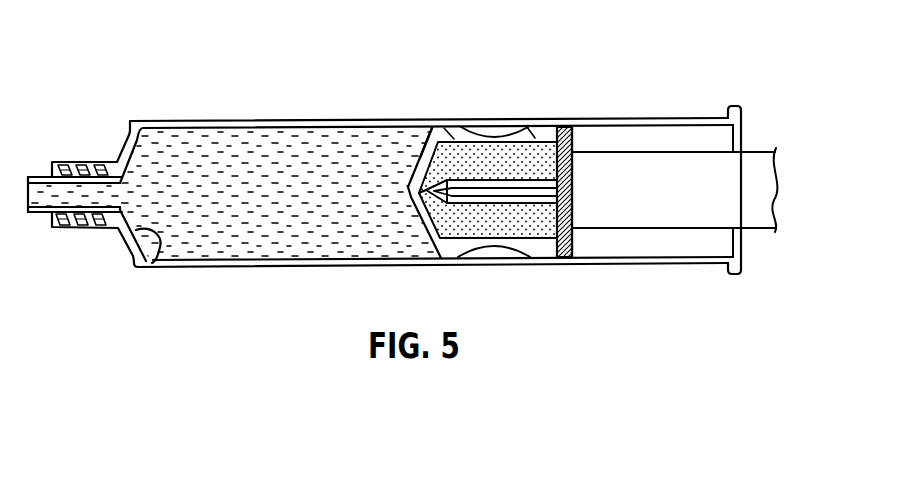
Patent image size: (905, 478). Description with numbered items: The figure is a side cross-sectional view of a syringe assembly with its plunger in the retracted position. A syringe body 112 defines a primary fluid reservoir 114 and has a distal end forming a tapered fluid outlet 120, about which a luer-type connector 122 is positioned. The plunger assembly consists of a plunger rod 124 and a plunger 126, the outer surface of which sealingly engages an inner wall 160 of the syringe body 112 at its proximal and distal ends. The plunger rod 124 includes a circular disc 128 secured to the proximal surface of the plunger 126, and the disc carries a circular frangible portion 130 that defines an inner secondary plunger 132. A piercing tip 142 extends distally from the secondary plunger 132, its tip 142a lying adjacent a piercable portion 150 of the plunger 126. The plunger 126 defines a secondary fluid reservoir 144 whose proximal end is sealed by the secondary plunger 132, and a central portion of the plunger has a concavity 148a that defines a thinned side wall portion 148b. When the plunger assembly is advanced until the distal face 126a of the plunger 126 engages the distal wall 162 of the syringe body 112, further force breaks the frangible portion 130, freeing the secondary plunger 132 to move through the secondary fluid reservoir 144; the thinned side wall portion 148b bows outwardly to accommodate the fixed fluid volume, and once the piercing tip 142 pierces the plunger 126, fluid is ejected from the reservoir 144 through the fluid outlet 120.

The syringe body 112 is at (202, 267).
The primary fluid reservoir 114 is at (250, 172).
The tapered fluid outlet 120 is at (43, 180).
The luer-type connector 122 is at (63, 227).
The plunger rod 124 is at (757, 222).
The plunger 126 is at (445, 126).
The distal face 126a is at (423, 161).
The circular disc 128 is at (573, 142).
The circular frangible portion 130 is at (561, 145).
The secondary plunger 132 is at (571, 208).
The piercing tip 142 is at (450, 203).
The tip 142a is at (430, 193).
The secondary fluid reservoir 144 is at (494, 156).
The concavity 148a is at (506, 130).
The thinned side wall portion 148b is at (488, 157).
The piercable portion 150 is at (430, 191).
The inner wall 160 is at (276, 254).
The distal wall 162 is at (155, 258).